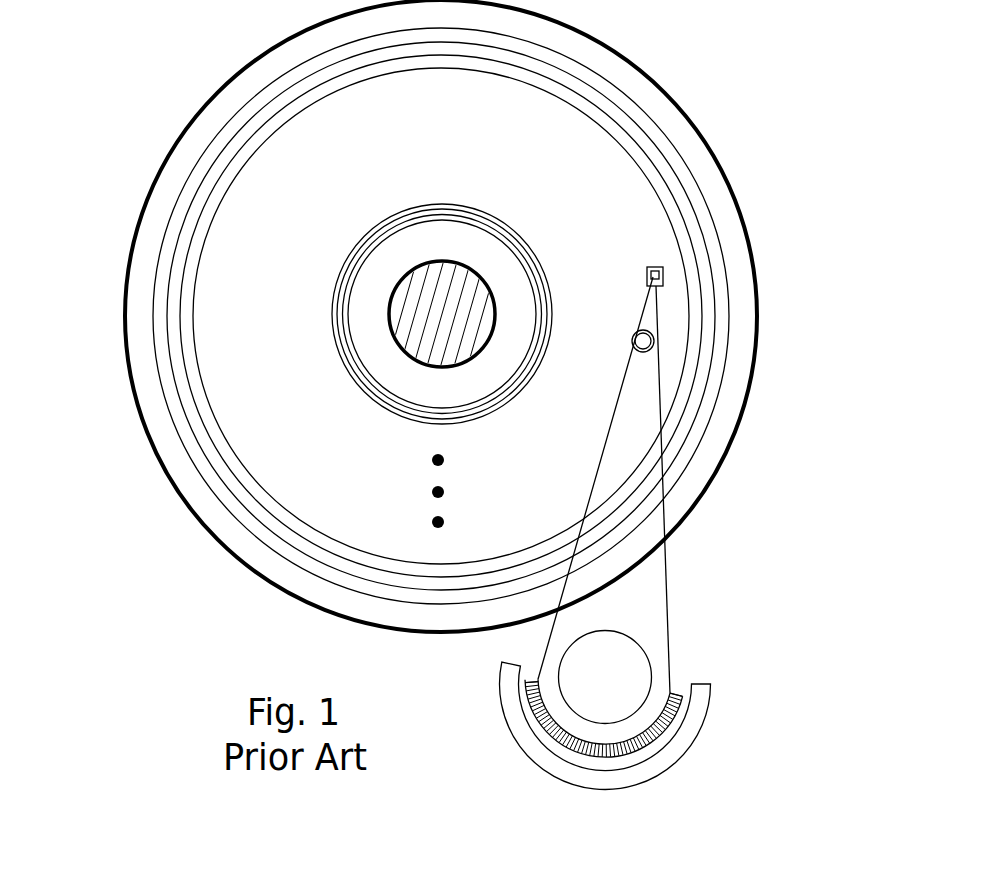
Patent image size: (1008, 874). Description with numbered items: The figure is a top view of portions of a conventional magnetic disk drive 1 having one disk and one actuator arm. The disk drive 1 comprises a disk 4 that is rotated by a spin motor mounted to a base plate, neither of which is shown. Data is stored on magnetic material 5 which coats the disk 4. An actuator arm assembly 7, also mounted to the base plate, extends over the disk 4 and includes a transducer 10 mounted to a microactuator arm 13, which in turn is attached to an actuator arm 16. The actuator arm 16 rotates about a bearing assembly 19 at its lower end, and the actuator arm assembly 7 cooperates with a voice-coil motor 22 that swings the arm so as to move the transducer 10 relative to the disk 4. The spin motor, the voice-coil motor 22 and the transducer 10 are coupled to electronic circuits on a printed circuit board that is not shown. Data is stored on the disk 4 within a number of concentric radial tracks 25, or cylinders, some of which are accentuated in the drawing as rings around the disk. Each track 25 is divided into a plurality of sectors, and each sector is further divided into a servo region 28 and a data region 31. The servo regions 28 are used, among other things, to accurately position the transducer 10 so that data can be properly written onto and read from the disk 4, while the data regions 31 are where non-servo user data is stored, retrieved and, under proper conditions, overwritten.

The disk drive 1 is at (828, 198).
The disk 4 is at (702, 135).
The magnetic material 5 is at (560, 214).
The actuator arm assembly 7 is at (664, 512).
The transducer 10 is at (664, 277).
The microactuator arm 13 is at (651, 318).
The actuator arm 16 is at (641, 557).
The bearing assembly 19 is at (650, 658).
The voice-coil motor 22 is at (678, 717).
The concentric radial tracks 25 is at (166, 407).
The servo region 28 is at (162, 246).
The data region 31 is at (155, 308).